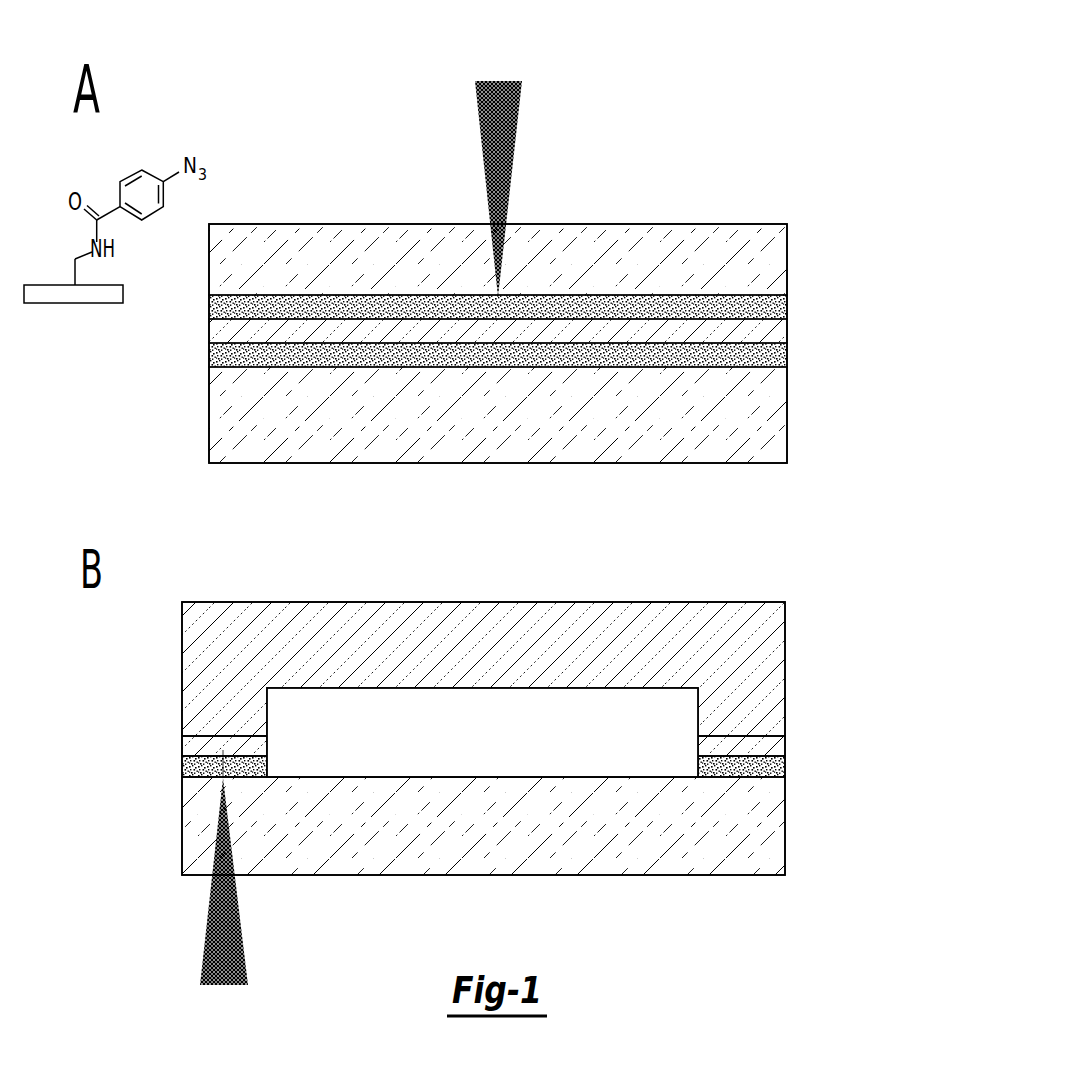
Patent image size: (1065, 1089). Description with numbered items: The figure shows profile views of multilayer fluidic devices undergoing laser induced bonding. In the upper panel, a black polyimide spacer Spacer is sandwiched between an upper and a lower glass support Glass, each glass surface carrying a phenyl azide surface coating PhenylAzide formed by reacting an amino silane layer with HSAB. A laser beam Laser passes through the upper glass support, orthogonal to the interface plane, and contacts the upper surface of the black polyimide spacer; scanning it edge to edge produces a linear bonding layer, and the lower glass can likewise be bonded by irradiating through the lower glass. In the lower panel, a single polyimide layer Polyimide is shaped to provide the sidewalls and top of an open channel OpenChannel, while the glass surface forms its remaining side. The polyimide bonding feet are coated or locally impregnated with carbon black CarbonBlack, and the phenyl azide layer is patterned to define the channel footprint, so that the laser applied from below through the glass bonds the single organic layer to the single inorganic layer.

The glass support Glass is at (527, 588).
The phenyl azide layer PhenylAzide is at (484, 536).
The black polyimide spacer Spacer is at (573, 315).
The laser beam Laser is at (361, 533).
The polyimide layer Polyimide is at (740, 594).
The carbon black CarbonBlack is at (485, 726).
The open channel OpenChannel is at (482, 722).